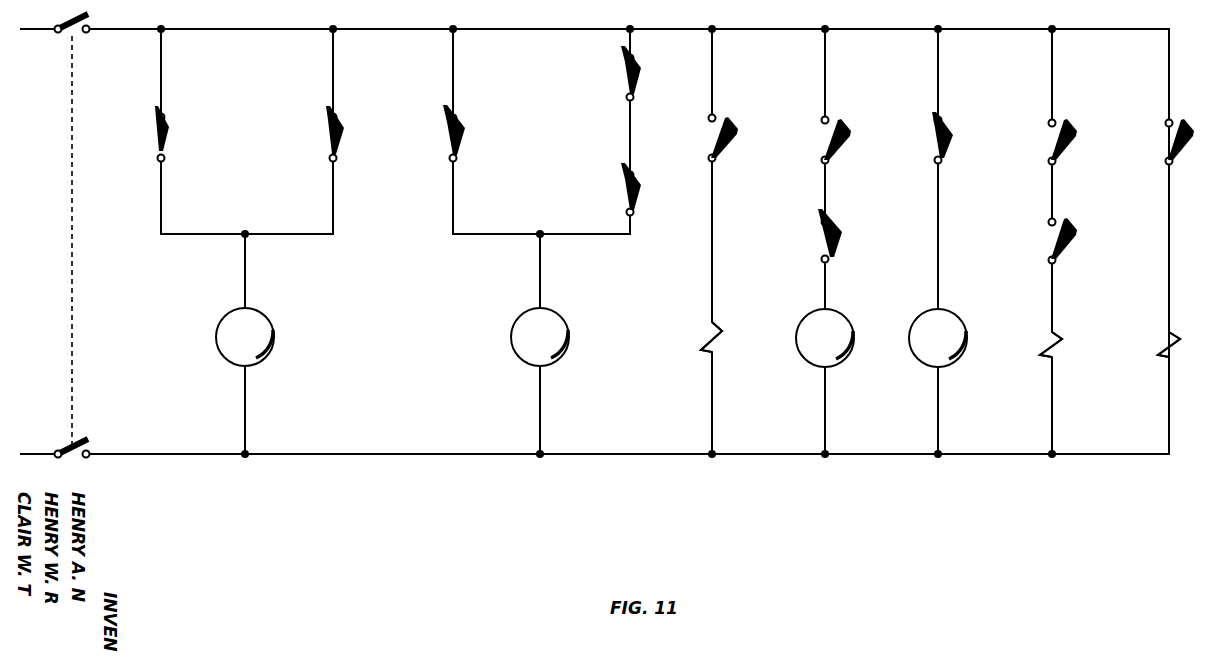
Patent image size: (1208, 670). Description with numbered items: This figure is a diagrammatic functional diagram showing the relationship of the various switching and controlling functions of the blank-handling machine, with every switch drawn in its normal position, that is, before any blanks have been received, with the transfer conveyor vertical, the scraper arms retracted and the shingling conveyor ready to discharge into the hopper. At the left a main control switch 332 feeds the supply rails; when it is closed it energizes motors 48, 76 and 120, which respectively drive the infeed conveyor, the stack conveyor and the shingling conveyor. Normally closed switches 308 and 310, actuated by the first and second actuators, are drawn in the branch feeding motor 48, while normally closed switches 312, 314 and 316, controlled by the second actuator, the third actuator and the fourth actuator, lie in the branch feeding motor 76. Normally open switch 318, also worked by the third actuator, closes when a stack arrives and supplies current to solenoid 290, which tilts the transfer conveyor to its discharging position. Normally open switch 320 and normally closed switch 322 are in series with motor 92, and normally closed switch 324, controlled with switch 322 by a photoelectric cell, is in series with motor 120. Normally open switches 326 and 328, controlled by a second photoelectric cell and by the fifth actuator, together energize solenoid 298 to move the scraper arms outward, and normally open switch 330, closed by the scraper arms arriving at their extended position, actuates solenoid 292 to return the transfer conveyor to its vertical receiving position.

The main control switch 332 is at (74, 282).
The switch 308 is at (168, 128).
The switch 310 is at (326, 143).
The switch 312 is at (450, 146).
The switch 314 is at (626, 80).
The switch 316 is at (628, 198).
The switch 318 is at (722, 144).
The switch 320 is at (828, 144).
The switch 322 is at (822, 251).
The switch 324 is at (936, 144).
The switch 326 is at (1054, 146).
The switch 328 is at (1054, 249).
The switch 330 is at (1174, 143).
The motor 48 is at (268, 340).
The motor 76 is at (560, 337).
The motor 92 is at (841, 331).
The motor 120 is at (954, 331).
The solenoid 290 is at (722, 331).
The solenoid 298 is at (1062, 339).
The solenoid 292 is at (1158, 355).